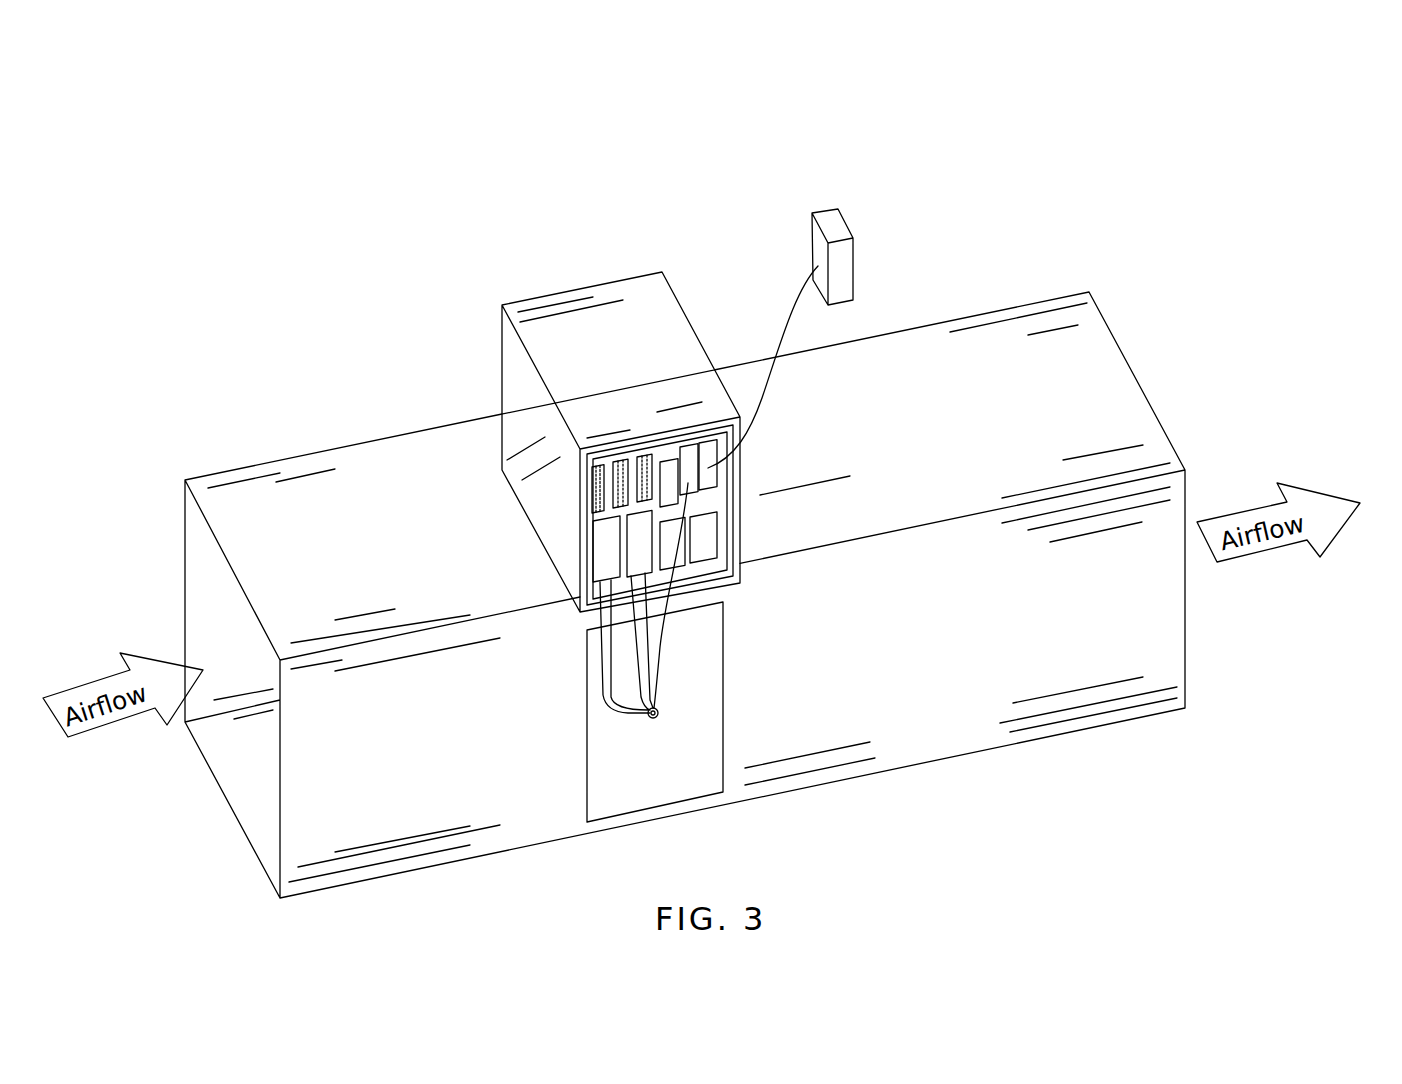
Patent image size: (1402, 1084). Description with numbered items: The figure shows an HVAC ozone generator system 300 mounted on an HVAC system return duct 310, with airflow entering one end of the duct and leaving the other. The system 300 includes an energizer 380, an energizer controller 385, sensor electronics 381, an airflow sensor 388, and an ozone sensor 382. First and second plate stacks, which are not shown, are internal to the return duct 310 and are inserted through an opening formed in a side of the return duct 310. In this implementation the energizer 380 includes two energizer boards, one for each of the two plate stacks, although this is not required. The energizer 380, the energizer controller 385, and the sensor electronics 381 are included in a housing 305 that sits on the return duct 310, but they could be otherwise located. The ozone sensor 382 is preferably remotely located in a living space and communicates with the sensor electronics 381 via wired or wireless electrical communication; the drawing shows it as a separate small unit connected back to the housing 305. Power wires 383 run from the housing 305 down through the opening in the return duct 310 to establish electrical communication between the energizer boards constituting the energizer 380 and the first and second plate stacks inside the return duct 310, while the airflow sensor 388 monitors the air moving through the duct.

The HVAC ozone generator system 300 is at (800, 143).
The housing 305 is at (652, 291).
The HVAC system return duct 310 is at (1137, 685).
The energizer 380 is at (607, 557).
The sensor electronics 381 is at (698, 546).
The ozone sensor 382 is at (855, 262).
The power wires 383 is at (605, 712).
The energizer controller 385 is at (630, 462).
The airflow sensor 388 is at (700, 463).